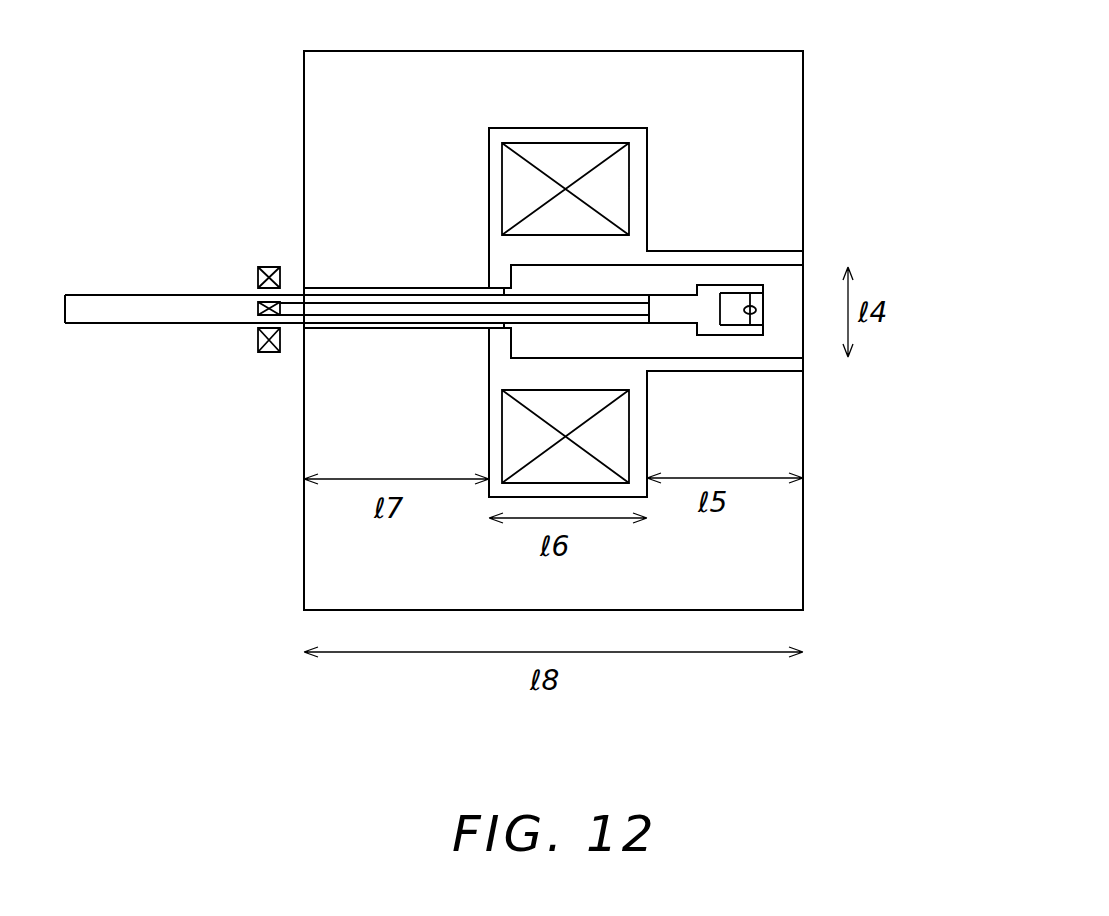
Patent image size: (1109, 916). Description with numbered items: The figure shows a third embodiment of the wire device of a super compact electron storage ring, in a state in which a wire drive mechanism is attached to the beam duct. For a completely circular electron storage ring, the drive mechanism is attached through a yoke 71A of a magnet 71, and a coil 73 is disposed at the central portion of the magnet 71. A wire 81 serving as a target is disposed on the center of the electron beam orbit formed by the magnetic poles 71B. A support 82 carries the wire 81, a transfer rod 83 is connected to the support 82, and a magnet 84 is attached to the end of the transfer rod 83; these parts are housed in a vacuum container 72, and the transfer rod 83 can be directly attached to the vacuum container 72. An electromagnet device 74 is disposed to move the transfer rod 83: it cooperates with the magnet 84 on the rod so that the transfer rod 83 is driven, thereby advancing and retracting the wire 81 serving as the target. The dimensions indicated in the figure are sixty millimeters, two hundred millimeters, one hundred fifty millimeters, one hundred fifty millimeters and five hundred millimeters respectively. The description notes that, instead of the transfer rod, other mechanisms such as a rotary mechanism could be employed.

The magnet 71 is at (779, 69).
The yoke 71A is at (343, 428).
The magnetic poles 71B is at (755, 459).
The vacuum container 72 is at (790, 280).
The coil 73 is at (617, 198).
The electromagnet device 74 is at (269, 260).
The wire 81 is at (753, 300).
The support 82 is at (685, 307).
The transfer rod 83 is at (302, 307).
The magnet 84 is at (257, 312).